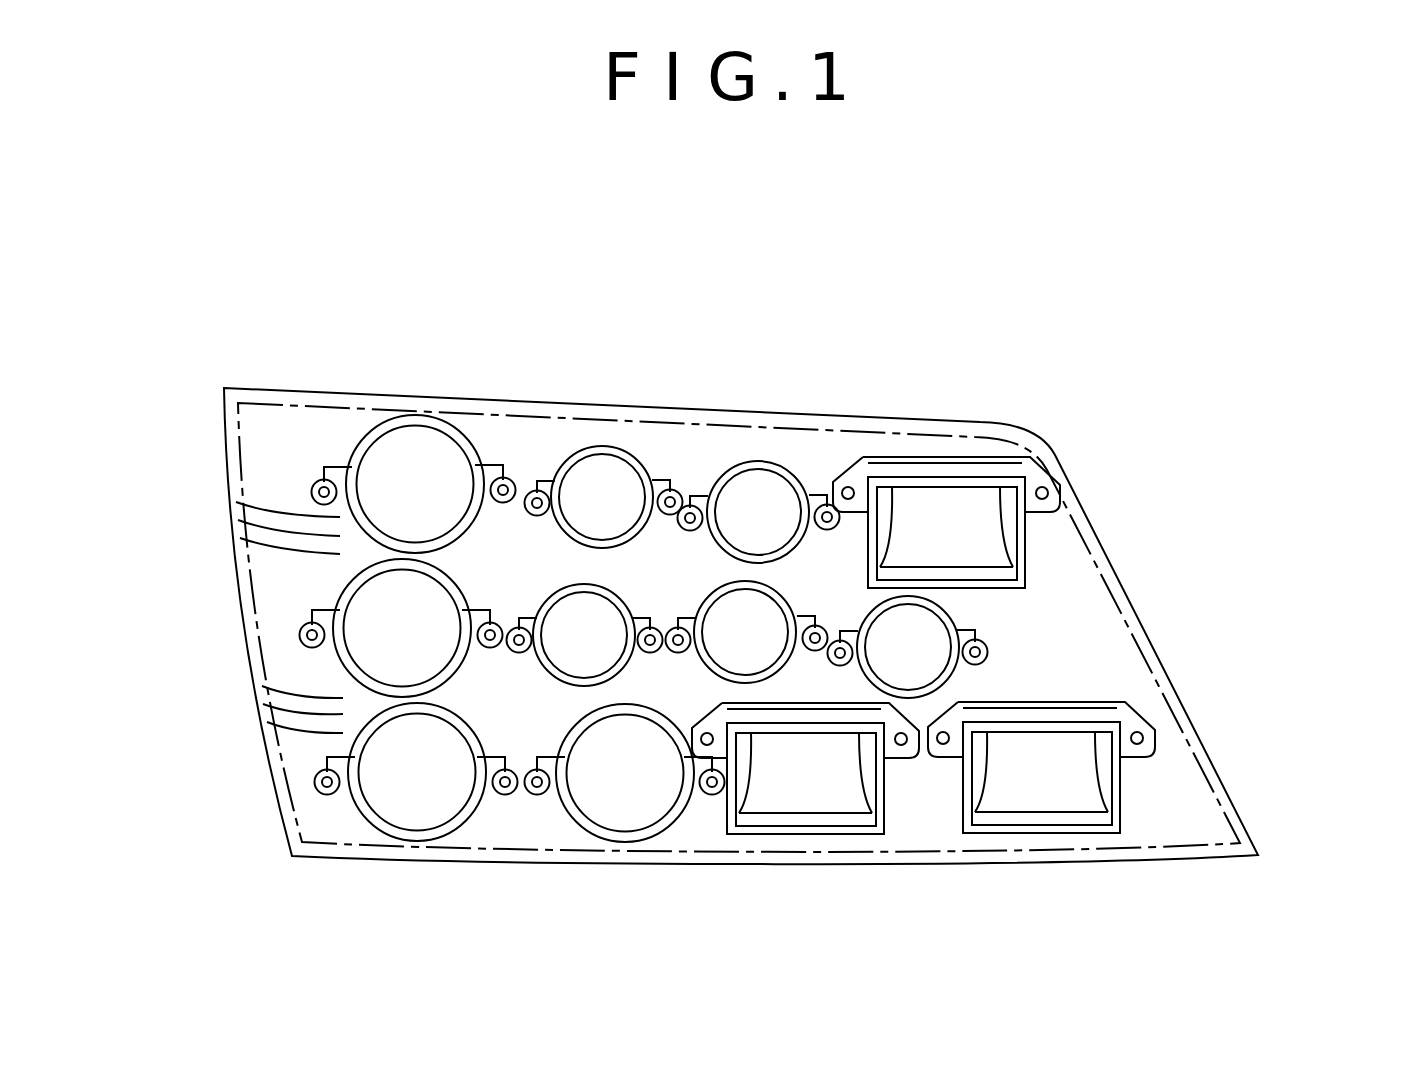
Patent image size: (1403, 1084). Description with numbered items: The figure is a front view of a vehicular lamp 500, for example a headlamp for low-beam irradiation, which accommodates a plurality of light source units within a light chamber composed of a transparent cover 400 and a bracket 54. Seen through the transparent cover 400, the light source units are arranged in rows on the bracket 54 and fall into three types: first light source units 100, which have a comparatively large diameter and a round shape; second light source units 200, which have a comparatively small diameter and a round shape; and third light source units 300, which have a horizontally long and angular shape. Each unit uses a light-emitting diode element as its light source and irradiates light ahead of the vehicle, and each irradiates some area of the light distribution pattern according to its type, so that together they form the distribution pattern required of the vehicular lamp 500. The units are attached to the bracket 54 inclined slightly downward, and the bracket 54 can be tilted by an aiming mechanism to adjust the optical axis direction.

The bracket 54 is at (815, 440).
The first light source unit 100 is at (272, 473).
The second light source unit 200 is at (562, 577).
The third light source unit 300 is at (1042, 533).
The transparent cover 400 is at (935, 420).
The vehicular lamp 500 is at (580, 230).